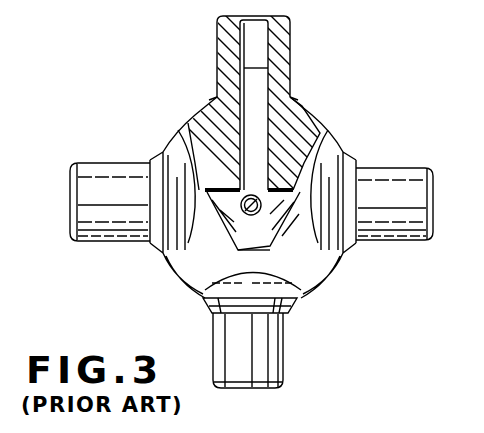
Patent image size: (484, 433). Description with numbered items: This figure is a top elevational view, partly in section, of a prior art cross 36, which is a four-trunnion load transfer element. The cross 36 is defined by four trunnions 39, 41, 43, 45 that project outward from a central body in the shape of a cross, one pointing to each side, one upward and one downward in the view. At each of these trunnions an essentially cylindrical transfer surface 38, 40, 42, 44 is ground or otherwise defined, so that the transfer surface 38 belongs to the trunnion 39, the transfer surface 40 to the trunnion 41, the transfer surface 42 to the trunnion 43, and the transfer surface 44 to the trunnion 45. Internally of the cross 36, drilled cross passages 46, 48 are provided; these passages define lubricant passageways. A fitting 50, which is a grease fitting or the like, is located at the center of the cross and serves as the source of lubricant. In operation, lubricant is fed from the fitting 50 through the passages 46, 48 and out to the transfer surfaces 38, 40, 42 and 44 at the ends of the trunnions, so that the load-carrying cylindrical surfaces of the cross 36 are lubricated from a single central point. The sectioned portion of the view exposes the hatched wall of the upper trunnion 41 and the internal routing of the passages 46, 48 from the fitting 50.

The cross 36 is at (210, 129).
The transfer surface 38 is at (100, 229).
The trunnion 39 is at (95, 162).
The transfer surface 40 is at (292, 48).
The trunnion 41 is at (216, 50).
The transfer surface 42 is at (389, 233).
The trunnion 43 is at (383, 167).
The transfer surface 44 is at (289, 351).
The trunnion 45 is at (212, 343).
The cross passage 46 is at (255, 108).
The cross passage 48 is at (276, 193).
The fitting 50 is at (222, 220).